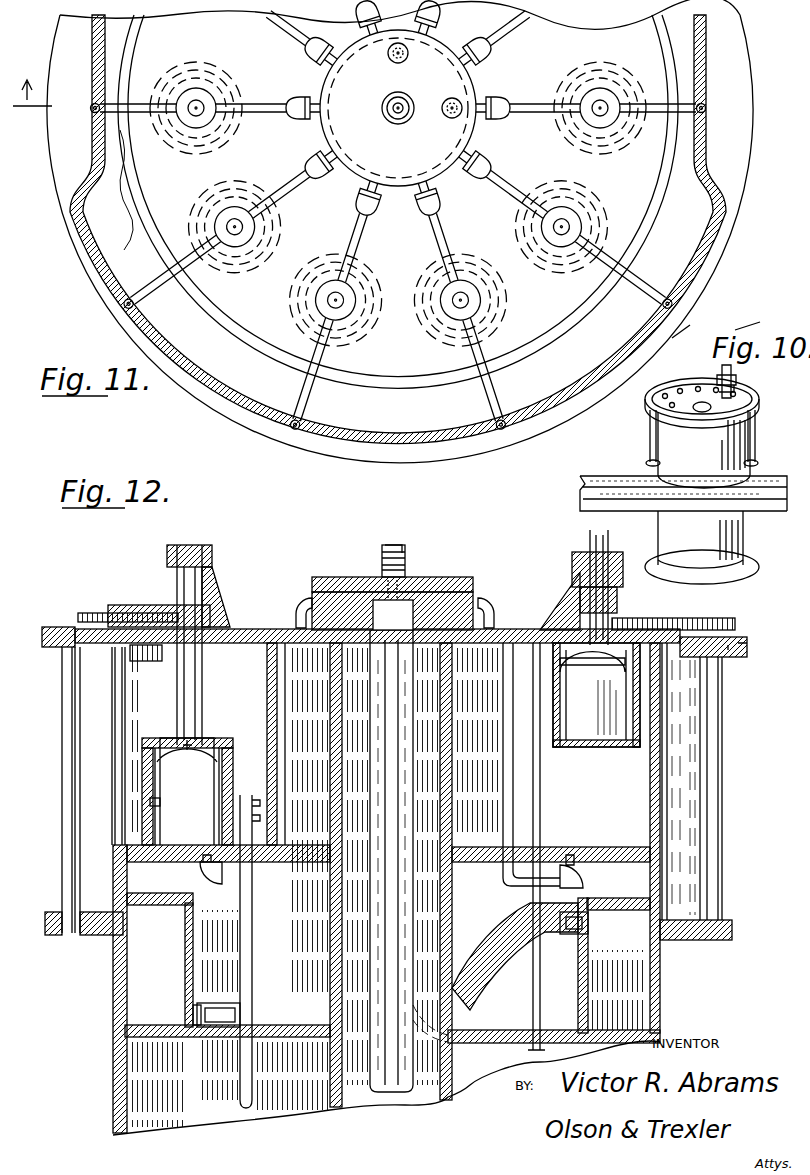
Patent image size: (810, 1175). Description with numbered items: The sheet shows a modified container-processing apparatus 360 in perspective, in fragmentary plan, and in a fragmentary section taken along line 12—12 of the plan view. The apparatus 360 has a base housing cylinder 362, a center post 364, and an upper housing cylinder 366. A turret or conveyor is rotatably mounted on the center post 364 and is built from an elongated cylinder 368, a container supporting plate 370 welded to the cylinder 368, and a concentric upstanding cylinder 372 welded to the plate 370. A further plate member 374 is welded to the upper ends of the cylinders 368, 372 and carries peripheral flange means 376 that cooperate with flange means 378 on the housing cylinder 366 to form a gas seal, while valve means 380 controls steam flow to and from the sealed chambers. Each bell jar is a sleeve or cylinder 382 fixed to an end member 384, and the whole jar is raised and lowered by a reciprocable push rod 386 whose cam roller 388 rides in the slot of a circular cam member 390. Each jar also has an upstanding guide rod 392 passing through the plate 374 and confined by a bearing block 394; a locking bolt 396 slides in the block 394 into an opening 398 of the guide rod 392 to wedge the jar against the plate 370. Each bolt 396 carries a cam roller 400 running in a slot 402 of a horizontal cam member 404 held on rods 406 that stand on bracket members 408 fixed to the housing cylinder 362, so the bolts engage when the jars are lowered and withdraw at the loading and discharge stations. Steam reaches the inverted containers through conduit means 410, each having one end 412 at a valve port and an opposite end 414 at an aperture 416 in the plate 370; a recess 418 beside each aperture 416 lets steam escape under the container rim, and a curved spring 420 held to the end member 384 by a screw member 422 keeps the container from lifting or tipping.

In FIG. 11, the section line 12 is at (359, 215).
In FIG. 10, the apparatus 360 is at (630, 452).
In FIG. 10, the base housing cylinder 362 is at (722, 534).
In FIG. 12, the base housing cylinder 362 is at (113, 986).
In FIG. 12, the center post 364 is at (396, 890).
In FIG. 10, the upper housing cylinder 366 is at (672, 437).
In FIG. 12, the upper housing cylinder 366 is at (665, 792).
In FIG. 12, the elongated cylinder 368 is at (541, 628).
In FIG. 12, the container supporting plate 370 is at (127, 832).
In FIG. 12, the upstanding cylinder 372 is at (250, 630).
In FIG. 11, the plate member 374 is at (258, 362).
In FIG. 12, the plate member 374 is at (228, 628).
In FIG. 12, the flange means 376 is at (702, 670).
In FIG. 12, the flange means 378 is at (668, 720).
In FIG. 11, the valve means 380 is at (502, 82).
In FIG. 12, the valve means 380 is at (431, 577).
In FIG. 12, the sleeve or cylinder 382 is at (145, 762).
In FIG. 12, the end member 384 is at (150, 742).
In FIG. 12, the push rod 386 is at (520, 790).
In FIG. 12, the cam roller 388 is at (200, 1030).
In FIG. 12, the circular cam member 390 is at (193, 1010).
In FIG. 11, the guide rod 392 is at (238, 214).
In FIG. 12, the guide rod 392 is at (590, 541).
In FIG. 11, the bearing block 394 is at (566, 222).
In FIG. 12, the bearing block 394 is at (172, 562).
In FIG. 11, the locking bolt 396 is at (160, 290).
In FIG. 12, the locking bolt 396 is at (110, 612).
In FIG. 12, the opening 398 is at (150, 663).
In FIG. 11, the cam roller 400 is at (120, 300).
In FIG. 12, the cam roller 400 is at (45, 630).
In FIG. 11, the slot 402 is at (84, 246).
In FIG. 11, the cam member 404 is at (60, 188).
In FIG. 10, the cam member 404 is at (656, 412).
In FIG. 12, the rods 406 is at (70, 852).
In FIG. 12, the bracket members 408 is at (90, 938).
In FIG. 12, the conduit means 410 is at (297, 740).
In FIG. 11, the end 412 is at (322, 104).
In FIG. 12, the end 412 is at (304, 598).
In FIG. 12, the end 414 is at (186, 868).
In FIG. 12, the aperture 416 is at (212, 886).
In FIG. 12, the recess 418 is at (150, 802).
In FIG. 12, the curved spring 420 is at (210, 746).
In FIG. 12, the screw member 422 is at (184, 740).